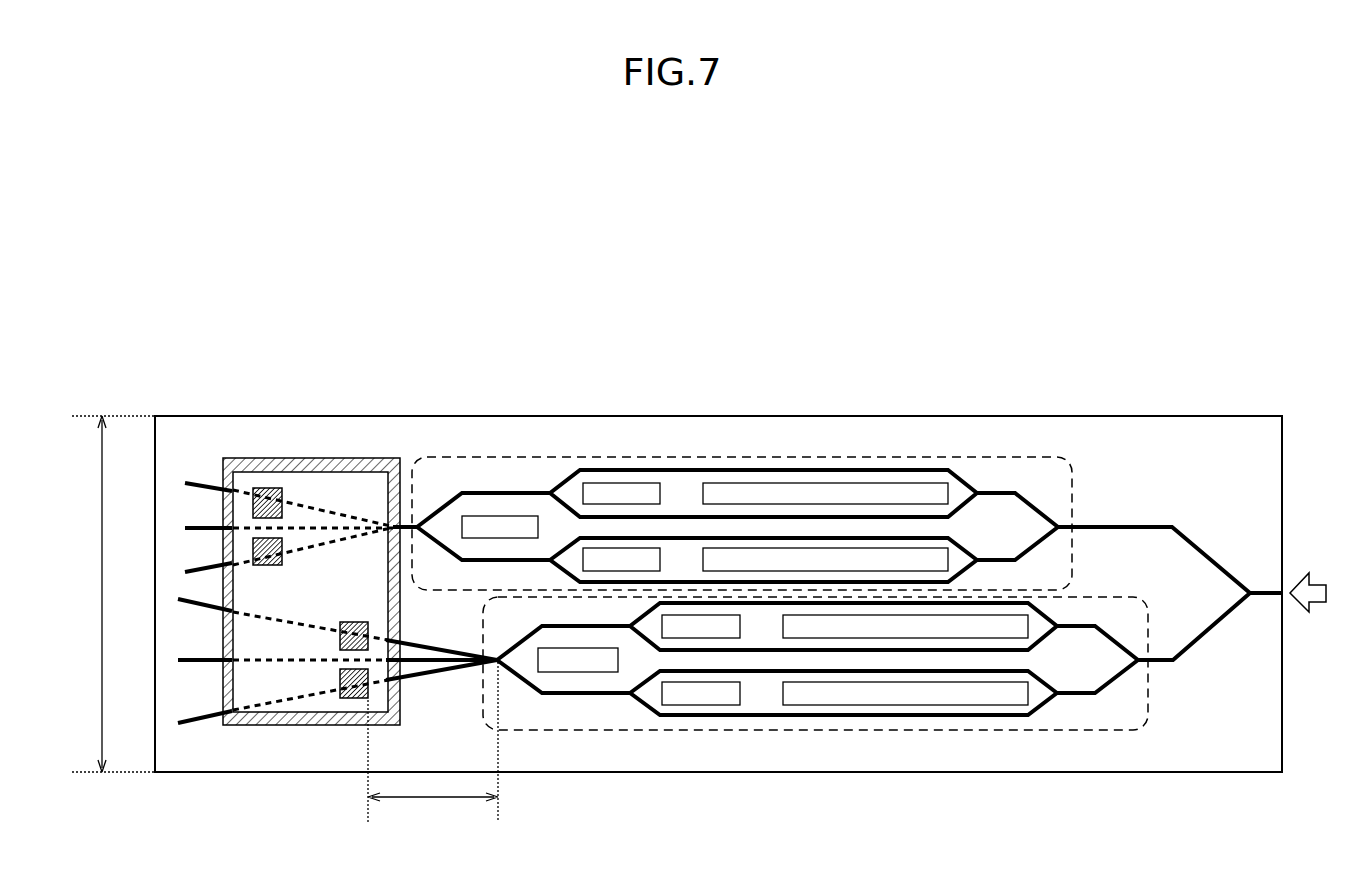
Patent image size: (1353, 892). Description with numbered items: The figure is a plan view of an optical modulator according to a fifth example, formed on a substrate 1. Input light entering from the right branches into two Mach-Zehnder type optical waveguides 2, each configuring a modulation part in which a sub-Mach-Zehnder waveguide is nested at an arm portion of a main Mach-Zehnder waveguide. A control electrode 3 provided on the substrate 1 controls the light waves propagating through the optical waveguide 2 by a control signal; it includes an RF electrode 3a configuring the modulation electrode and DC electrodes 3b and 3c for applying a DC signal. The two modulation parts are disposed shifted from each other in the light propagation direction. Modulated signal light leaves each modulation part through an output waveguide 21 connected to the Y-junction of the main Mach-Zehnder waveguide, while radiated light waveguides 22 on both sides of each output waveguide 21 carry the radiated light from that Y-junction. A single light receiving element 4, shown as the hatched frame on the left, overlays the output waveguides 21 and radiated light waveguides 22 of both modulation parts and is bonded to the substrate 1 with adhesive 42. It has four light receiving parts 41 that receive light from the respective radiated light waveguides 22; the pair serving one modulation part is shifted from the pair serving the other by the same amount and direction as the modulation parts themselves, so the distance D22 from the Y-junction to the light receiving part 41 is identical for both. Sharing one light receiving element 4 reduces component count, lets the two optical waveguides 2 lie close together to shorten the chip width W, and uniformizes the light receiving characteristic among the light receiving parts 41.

The substrate 1 is at (1254, 432).
The optical waveguide 2 is at (1247, 560).
The control electrode 3 is at (745, 505).
The RF electrode 3a is at (815, 482).
The DC electrode 3b is at (612, 482).
The DC electrode 3c is at (495, 514).
The light receiving element 4 is at (299, 457).
The light receiving part 41 is at (268, 492).
The adhesive 42 is at (239, 458).
The output waveguide 21 is at (200, 527).
The radiated light waveguide 22 is at (200, 572).
The chip width W is at (113, 594).
The distance D22 is at (433, 744).